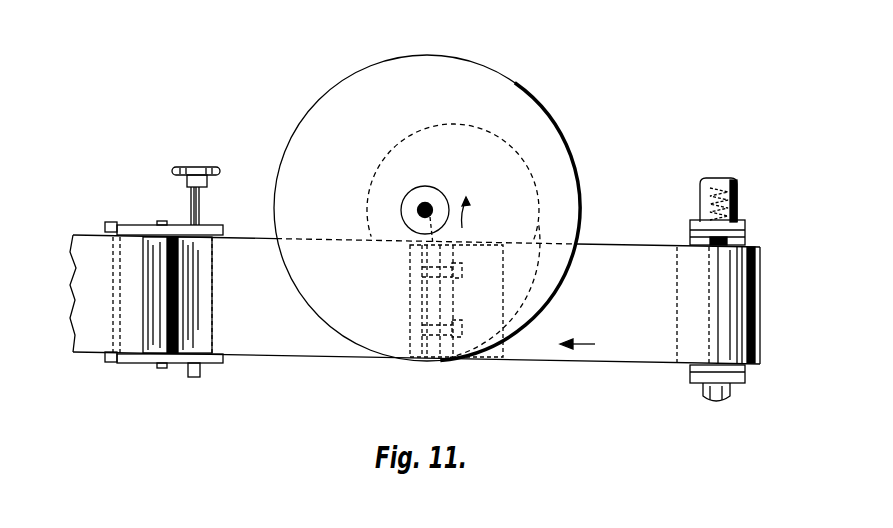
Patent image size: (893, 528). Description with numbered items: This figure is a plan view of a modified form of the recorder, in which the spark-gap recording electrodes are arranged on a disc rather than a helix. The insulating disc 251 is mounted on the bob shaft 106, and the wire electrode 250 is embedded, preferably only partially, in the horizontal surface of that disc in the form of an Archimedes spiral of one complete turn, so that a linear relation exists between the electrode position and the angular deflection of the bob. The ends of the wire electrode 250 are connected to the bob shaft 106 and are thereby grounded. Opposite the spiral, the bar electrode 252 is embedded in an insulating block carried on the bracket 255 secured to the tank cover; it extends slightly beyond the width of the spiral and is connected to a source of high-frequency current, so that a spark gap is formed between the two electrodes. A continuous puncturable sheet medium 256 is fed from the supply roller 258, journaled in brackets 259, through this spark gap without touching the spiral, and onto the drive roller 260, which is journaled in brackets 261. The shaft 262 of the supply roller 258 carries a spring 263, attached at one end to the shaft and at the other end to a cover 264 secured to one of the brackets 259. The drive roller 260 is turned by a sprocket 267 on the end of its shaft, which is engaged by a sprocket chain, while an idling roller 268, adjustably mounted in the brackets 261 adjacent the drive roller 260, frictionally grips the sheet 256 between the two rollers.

The bob shaft 106 is at (432, 208).
The wire electrode 250 is at (477, 130).
The insulating disc 251 is at (503, 74).
The bar electrode 252 is at (420, 297).
The bracket 255 is at (447, 314).
The puncturable sheet medium 256 is at (332, 353).
The supply roller 258 is at (677, 338).
The brackets 259 is at (747, 233).
The drive roller 260 is at (213, 285).
The brackets 261 is at (220, 232).
The shaft 262 is at (742, 227).
The spring 263 is at (737, 198).
The cover 264 is at (733, 177).
The sprocket 267 is at (217, 167).
The idling roller 268 is at (143, 276).